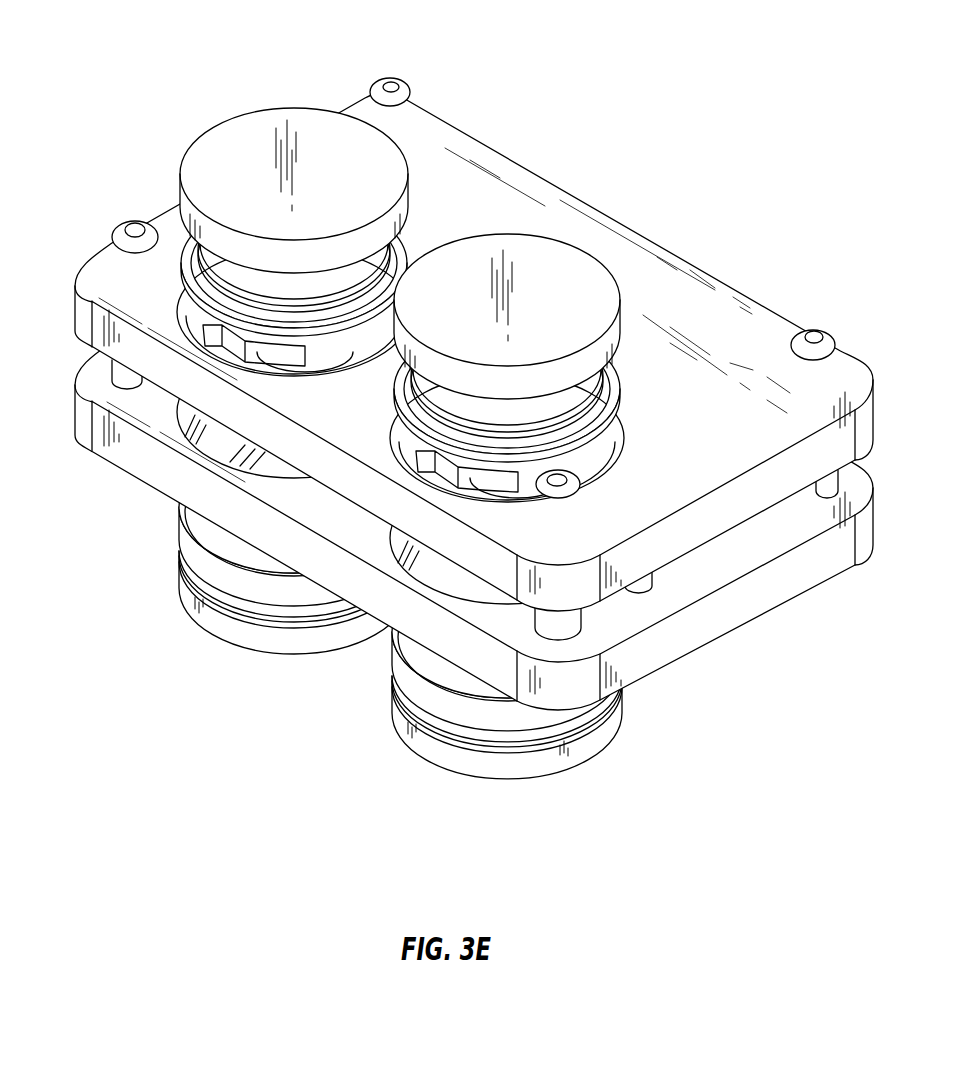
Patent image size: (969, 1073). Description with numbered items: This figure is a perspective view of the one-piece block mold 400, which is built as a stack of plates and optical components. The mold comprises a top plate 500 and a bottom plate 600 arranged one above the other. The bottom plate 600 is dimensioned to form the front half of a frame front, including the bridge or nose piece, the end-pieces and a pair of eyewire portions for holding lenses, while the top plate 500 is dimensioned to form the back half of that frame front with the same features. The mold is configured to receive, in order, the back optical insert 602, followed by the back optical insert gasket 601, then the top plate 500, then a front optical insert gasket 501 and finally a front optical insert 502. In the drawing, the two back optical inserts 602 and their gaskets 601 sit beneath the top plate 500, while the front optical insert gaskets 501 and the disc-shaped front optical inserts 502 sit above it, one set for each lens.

The one-piece block mold 400 is at (131, 60).
The top plate 500 is at (730, 607).
The front optical insert gasket 501 is at (178, 257).
The front optical insert 502 is at (200, 148).
The bottom plate 600 is at (700, 527).
The back optical insert gasket 601 is at (178, 530).
The back optical insert 602 is at (268, 643).